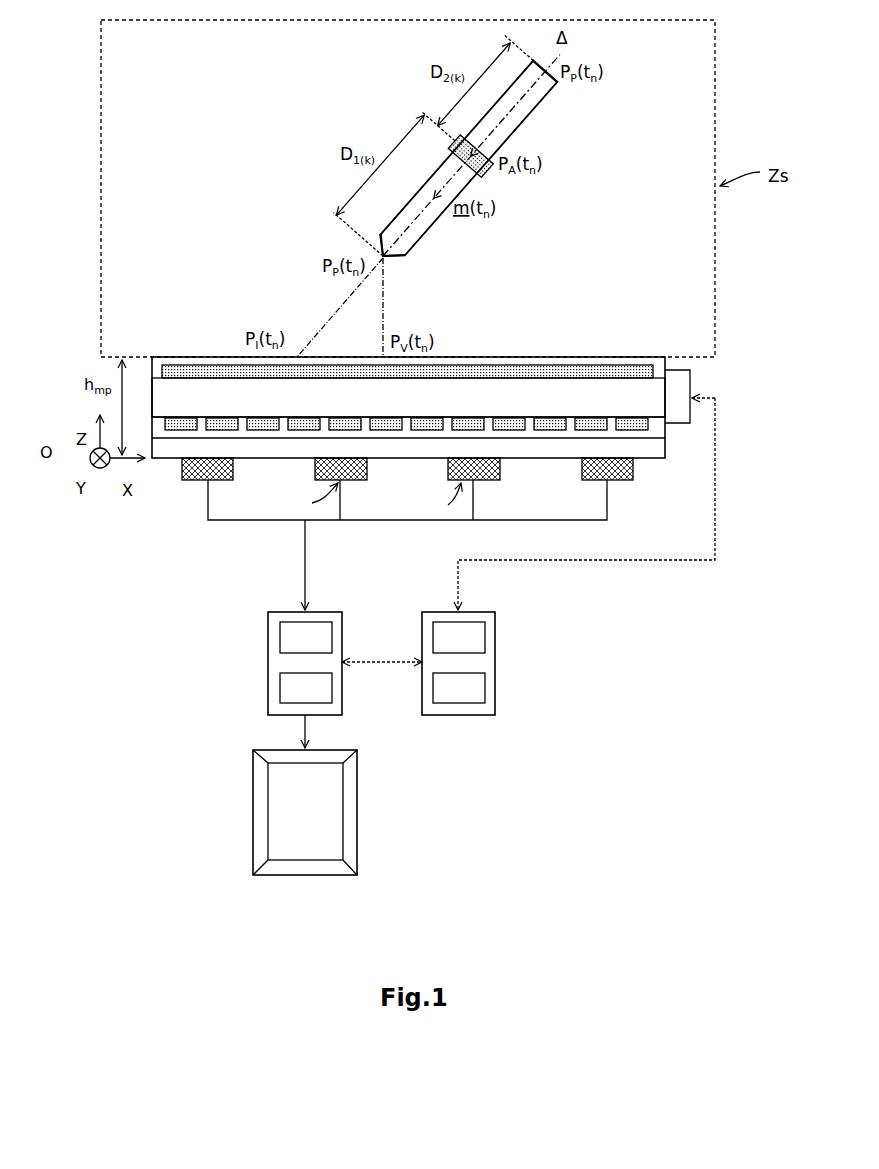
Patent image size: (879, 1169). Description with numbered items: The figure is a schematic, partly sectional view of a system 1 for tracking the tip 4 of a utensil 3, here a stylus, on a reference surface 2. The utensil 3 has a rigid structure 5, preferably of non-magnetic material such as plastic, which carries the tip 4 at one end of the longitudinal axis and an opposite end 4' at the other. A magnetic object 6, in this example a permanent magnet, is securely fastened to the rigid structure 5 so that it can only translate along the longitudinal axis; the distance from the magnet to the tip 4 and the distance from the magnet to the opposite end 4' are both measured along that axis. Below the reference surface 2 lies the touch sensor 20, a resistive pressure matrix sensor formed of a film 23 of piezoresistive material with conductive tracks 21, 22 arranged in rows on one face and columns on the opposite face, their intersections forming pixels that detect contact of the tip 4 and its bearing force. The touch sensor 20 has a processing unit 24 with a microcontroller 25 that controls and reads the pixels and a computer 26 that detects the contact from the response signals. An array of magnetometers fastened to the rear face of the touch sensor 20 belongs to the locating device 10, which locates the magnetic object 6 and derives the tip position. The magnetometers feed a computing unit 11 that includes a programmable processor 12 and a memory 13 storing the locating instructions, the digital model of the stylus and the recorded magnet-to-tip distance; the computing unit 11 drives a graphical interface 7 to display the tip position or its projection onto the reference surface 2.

The tracking system 1 is at (112, 292).
The reference surface 2 is at (607, 355).
The utensil 3 is at (501, 160).
The tip 4 is at (408, 272).
The opposite end 4' is at (571, 89).
The rigid structure 5 is at (464, 164).
The magnetic object 6 is at (470, 156).
The graphical interface 7 is at (360, 811).
The locating device 10 is at (745, 460).
The computing unit 11 is at (256, 663).
The programmable processor 12 is at (276, 636).
The memory 13 is at (276, 688).
The touch sensor 20 is at (745, 368).
The conductive tracks 21 is at (163, 372).
The conductive tracks 22 is at (226, 415).
The film 23 is at (214, 413).
The processing unit 24 is at (503, 663).
The microcontroller 25 is at (488, 636).
The computer 26 is at (488, 688).